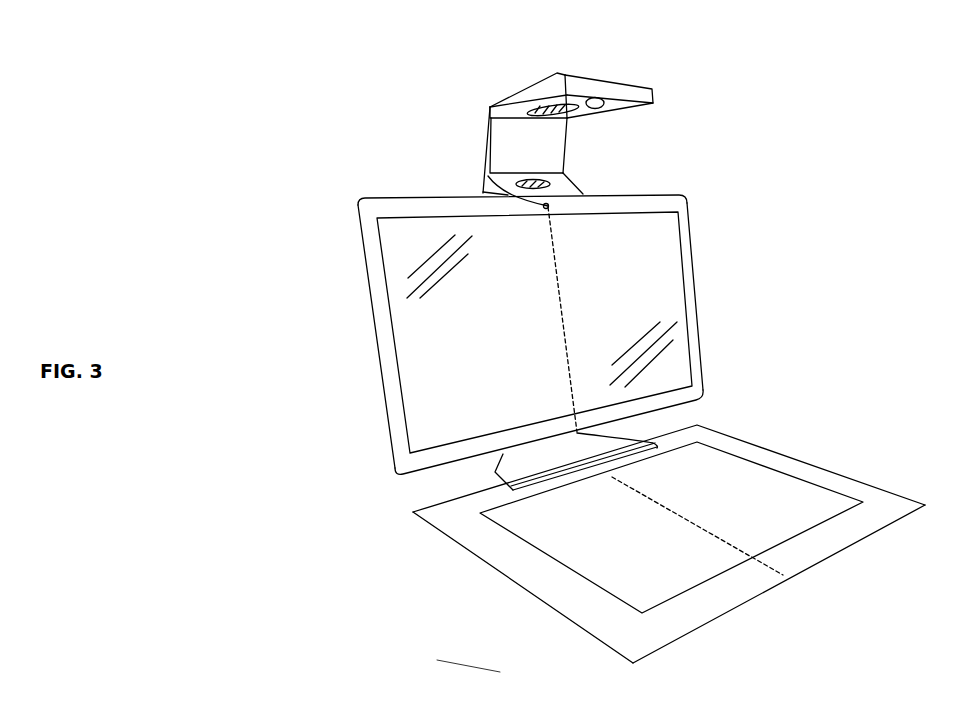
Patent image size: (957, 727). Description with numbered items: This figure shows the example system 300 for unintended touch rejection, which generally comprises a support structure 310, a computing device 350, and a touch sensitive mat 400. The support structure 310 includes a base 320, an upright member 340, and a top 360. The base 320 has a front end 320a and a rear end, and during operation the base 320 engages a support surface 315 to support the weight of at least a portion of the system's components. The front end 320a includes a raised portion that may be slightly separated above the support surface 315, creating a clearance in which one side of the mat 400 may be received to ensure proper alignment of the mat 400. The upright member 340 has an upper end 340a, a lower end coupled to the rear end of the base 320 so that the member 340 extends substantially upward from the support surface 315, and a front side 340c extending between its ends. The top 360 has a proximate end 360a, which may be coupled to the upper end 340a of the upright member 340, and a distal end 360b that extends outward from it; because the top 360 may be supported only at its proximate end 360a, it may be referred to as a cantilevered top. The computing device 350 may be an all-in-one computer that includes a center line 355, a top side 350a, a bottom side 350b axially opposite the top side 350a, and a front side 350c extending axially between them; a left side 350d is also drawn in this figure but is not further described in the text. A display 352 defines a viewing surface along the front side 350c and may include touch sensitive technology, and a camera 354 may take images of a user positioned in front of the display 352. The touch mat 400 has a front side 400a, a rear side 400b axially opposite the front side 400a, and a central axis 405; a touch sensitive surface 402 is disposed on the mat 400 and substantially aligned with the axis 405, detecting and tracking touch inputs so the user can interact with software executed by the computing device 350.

The system 300 is at (803, 143).
The support structure 310 is at (357, 168).
The support surface 315 is at (497, 667).
The base 320 is at (493, 473).
The front end 320a is at (560, 475).
The upright member 340 is at (478, 162).
The upper end 340a is at (488, 105).
The front side 340c is at (550, 137).
The computing device 350 is at (693, 268).
The top side 350a is at (648, 195).
The bottom side 350b is at (668, 407).
The front side 350c is at (677, 330).
The display left edge 350d is at (363, 302).
The display 352 is at (672, 230).
The camera 354 is at (490, 195).
The center line 355 is at (558, 312).
The top 360 is at (570, 63).
The proximate end 360a is at (457, 85).
The distal end 360b is at (648, 85).
The touch sensitive mat 400 is at (868, 480).
The front side 400a is at (692, 645).
The rear side 400b is at (428, 500).
The touch sensitive surface 402 is at (780, 517).
The axis 405 is at (675, 515).